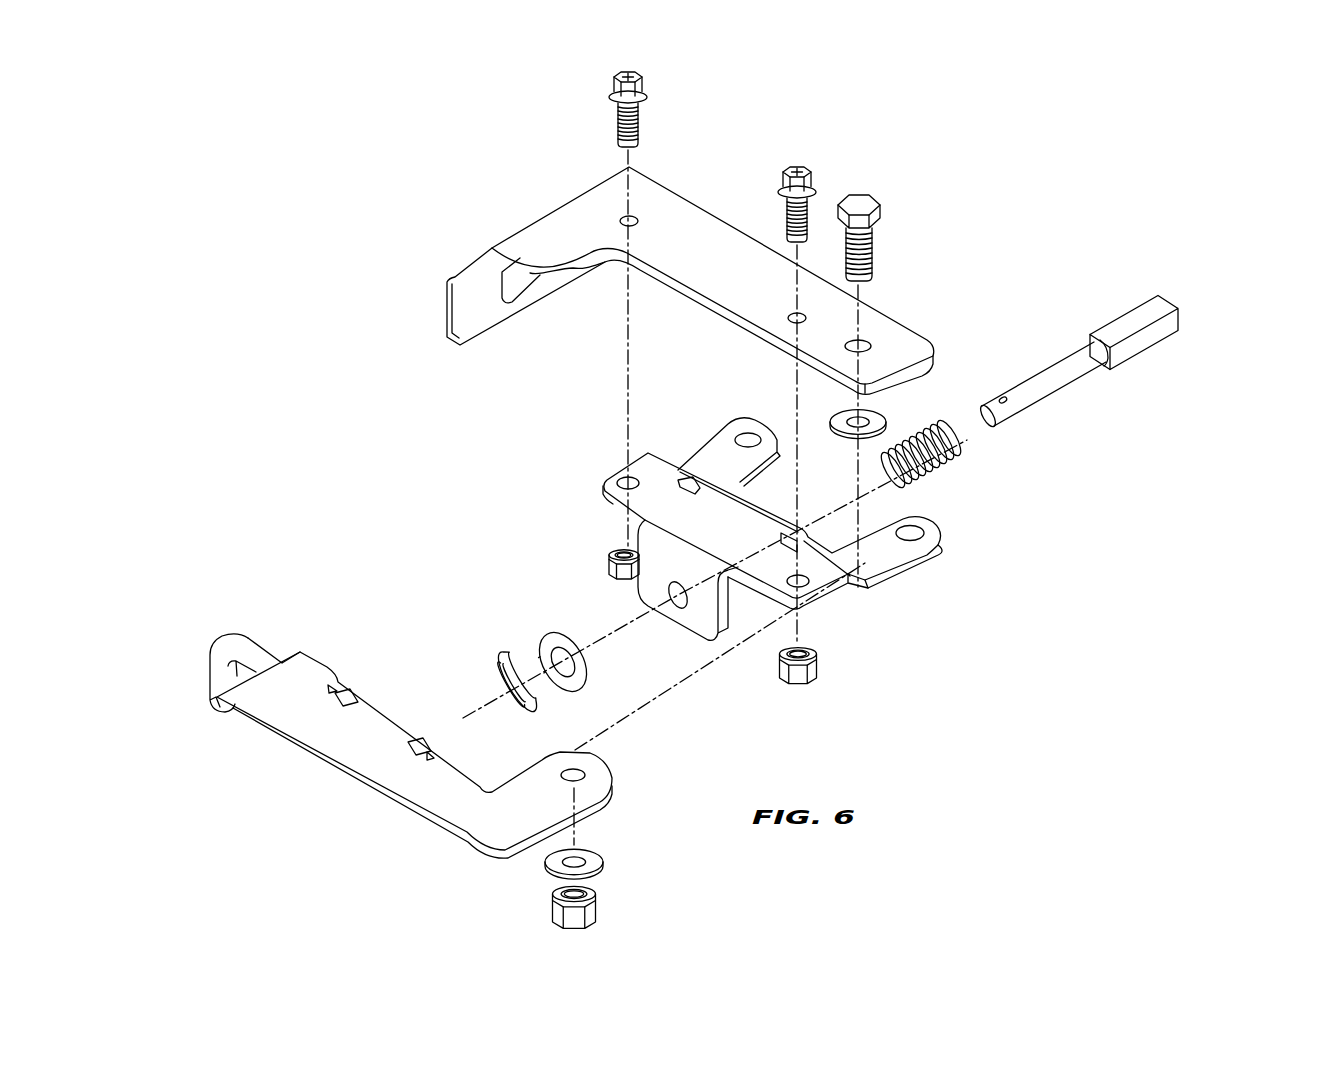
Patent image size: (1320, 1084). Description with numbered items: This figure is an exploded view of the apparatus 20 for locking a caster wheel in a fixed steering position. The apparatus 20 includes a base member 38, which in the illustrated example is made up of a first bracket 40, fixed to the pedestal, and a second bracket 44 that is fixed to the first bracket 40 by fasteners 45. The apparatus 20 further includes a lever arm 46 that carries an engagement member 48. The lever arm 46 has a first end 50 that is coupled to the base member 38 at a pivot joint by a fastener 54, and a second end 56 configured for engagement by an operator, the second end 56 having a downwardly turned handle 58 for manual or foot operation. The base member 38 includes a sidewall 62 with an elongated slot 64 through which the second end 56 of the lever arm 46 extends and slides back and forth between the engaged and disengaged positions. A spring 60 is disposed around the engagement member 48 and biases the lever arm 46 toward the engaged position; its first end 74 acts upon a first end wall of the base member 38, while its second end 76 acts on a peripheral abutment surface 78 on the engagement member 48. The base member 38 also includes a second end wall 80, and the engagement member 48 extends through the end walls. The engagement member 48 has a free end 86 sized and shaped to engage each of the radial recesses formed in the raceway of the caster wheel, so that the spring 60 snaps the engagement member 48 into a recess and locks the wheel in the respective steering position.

The apparatus 20 is at (983, 152).
The base member 38 is at (388, 402).
The first bracket 40 is at (905, 555).
The second bracket 44 is at (698, 227).
The fasteners 45 is at (645, 94).
The lever arm 46 is at (375, 720).
The engagement member 48 is at (1063, 381).
The first end of the lever arm 50 is at (467, 817).
The fastener 54 is at (864, 201).
The second end of the lever arm 56 is at (270, 655).
The downwardly turned handle 58 is at (215, 678).
The spring 60 is at (917, 428).
The sidewall 62 is at (472, 317).
The elongated slot 64 is at (518, 288).
The first end of the spring 74 is at (905, 487).
The second end of the spring 76 is at (962, 445).
The peripheral abutment surface 78 is at (1088, 337).
The second end wall 80 is at (642, 602).
The free end 86 is at (1171, 299).